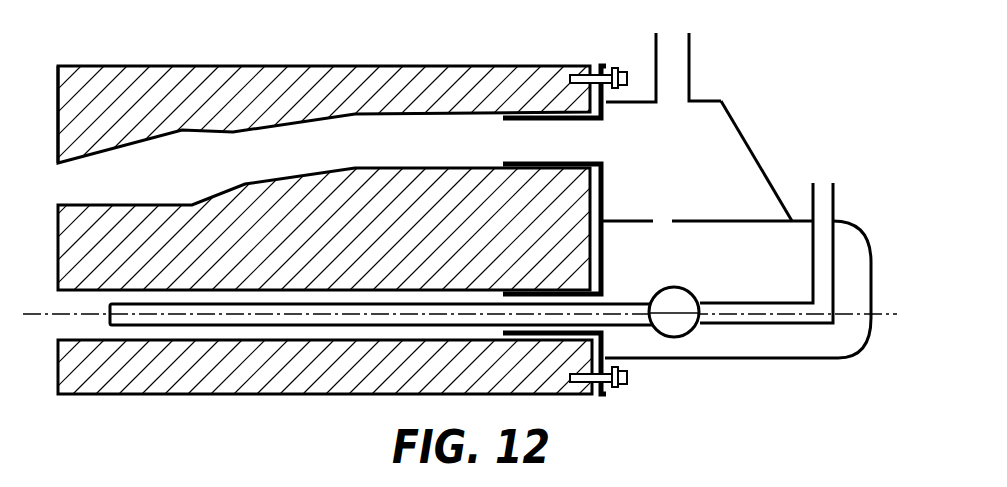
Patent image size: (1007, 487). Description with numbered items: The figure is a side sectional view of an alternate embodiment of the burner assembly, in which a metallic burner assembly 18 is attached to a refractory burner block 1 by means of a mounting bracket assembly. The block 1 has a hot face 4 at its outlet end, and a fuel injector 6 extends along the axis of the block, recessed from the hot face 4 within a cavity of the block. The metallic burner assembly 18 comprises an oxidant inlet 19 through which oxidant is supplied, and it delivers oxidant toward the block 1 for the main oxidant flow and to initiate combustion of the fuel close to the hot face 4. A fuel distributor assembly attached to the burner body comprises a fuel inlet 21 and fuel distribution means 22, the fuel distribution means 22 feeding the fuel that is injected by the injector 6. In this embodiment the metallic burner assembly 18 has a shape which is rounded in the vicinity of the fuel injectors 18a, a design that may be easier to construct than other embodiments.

The refractory burner block 1 is at (190, 73).
The hot face 4 is at (57, 120).
The injector 6 is at (180, 326).
The metallic burner assembly 18 is at (737, 125).
The rounded shape in the vicinity of the fuel injectors 18a is at (862, 244).
The oxidant inlet 19 is at (693, 67).
The fuel inlet 21 is at (834, 195).
The fuel distribution means 22 is at (673, 337).